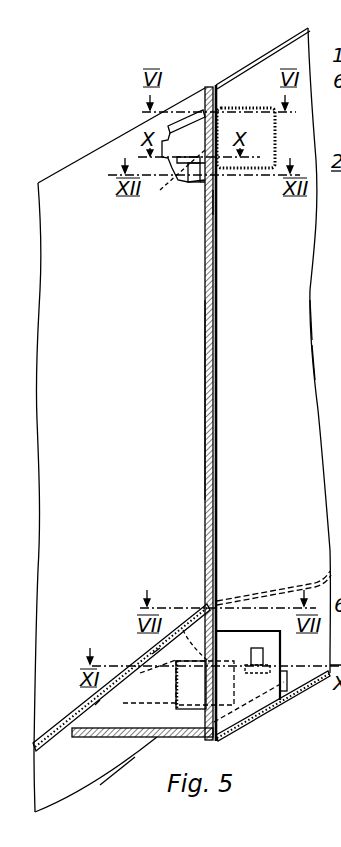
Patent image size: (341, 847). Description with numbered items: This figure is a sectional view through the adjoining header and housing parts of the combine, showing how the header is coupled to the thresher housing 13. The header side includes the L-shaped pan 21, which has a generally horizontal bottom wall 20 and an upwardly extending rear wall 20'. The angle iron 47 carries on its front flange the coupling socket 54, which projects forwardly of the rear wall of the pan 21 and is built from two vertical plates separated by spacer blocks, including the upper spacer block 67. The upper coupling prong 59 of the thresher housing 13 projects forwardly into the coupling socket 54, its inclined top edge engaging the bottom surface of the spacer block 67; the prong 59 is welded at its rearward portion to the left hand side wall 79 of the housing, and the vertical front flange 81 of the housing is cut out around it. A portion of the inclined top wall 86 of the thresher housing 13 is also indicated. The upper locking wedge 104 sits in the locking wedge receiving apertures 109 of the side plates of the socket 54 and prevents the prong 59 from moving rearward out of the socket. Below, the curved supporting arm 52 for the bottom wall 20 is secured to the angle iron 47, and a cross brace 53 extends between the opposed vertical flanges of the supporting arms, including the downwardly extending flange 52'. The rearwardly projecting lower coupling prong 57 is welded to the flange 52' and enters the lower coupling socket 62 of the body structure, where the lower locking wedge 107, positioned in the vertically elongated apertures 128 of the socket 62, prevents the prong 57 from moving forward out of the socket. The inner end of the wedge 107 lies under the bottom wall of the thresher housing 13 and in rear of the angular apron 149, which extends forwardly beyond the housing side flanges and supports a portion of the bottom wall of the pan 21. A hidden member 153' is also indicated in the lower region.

The top wall of the thresher housing 86 is at (274, 48).
The upper spacer block 67 is at (180, 120).
The upper coupling prong 59 is at (250, 115).
The locking wedge receiving aperture 109 is at (258, 217).
The upper locking wedge 104 is at (190, 172).
The coupling socket 54 is at (182, 184).
The rear wall 20' is at (180, 400).
The front flange 81 is at (217, 458).
The left hand side wall 79 is at (309, 320).
The thresher housing 13 is at (305, 366).
The angular apron 149 is at (181, 624).
The cross brace 53 is at (158, 652).
The bottom wall 20 is at (74, 683).
The pan 21 is at (62, 726).
The hidden box 153' is at (136, 692).
The coupling prong member 57 is at (174, 692).
The angle iron 47 is at (199, 737).
The vertical flange 52' is at (128, 775).
The curved supporting arm 52 is at (96, 774).
The vertically elongated aperture 128 is at (255, 648).
The lower locking wedge 107 is at (268, 661).
The lower coupling socket 62 is at (258, 696).